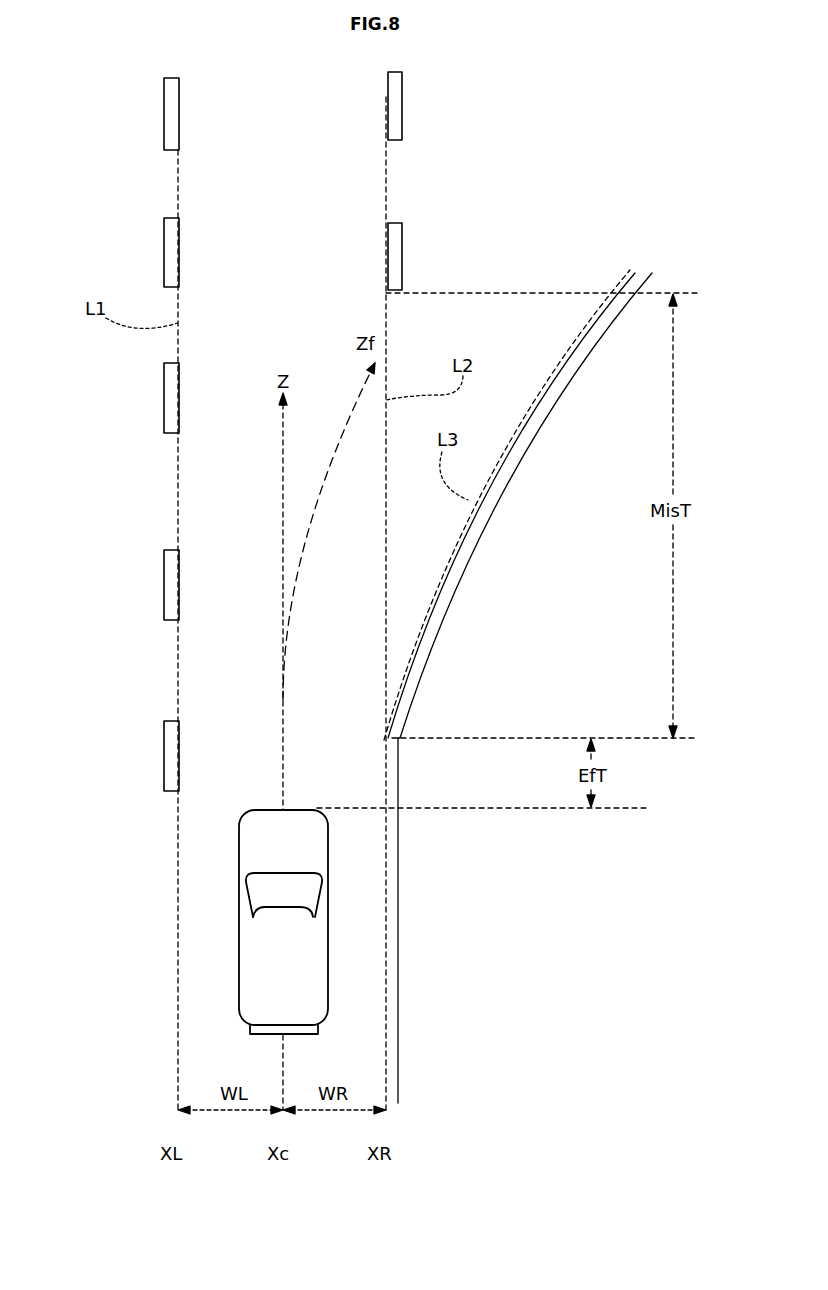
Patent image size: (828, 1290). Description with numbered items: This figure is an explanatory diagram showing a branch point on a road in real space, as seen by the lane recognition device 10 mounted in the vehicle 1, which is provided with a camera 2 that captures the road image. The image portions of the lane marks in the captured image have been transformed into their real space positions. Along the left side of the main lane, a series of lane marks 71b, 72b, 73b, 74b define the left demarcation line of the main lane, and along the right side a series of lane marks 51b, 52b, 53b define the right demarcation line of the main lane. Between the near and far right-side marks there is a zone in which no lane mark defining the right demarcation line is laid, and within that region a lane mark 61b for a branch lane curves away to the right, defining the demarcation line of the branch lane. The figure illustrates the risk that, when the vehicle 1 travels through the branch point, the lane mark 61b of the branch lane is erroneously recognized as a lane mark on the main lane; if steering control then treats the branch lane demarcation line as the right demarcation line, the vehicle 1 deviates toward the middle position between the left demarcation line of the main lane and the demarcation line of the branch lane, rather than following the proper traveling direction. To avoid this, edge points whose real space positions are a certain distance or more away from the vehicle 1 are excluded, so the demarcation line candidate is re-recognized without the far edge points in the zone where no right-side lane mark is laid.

The vehicle 1 is at (239, 978).
The camera 2 is at (270, 905).
The lane recognition device 10 is at (266, 924).
The lane mark 51b is at (392, 777).
The lane mark 52b is at (402, 255).
The lane mark 53b is at (402, 108).
The lane mark 61b is at (497, 500).
The lane mark 71b is at (164, 772).
The lane mark 72b is at (164, 574).
The lane mark 73b is at (164, 388).
The lane mark 74b is at (164, 237).